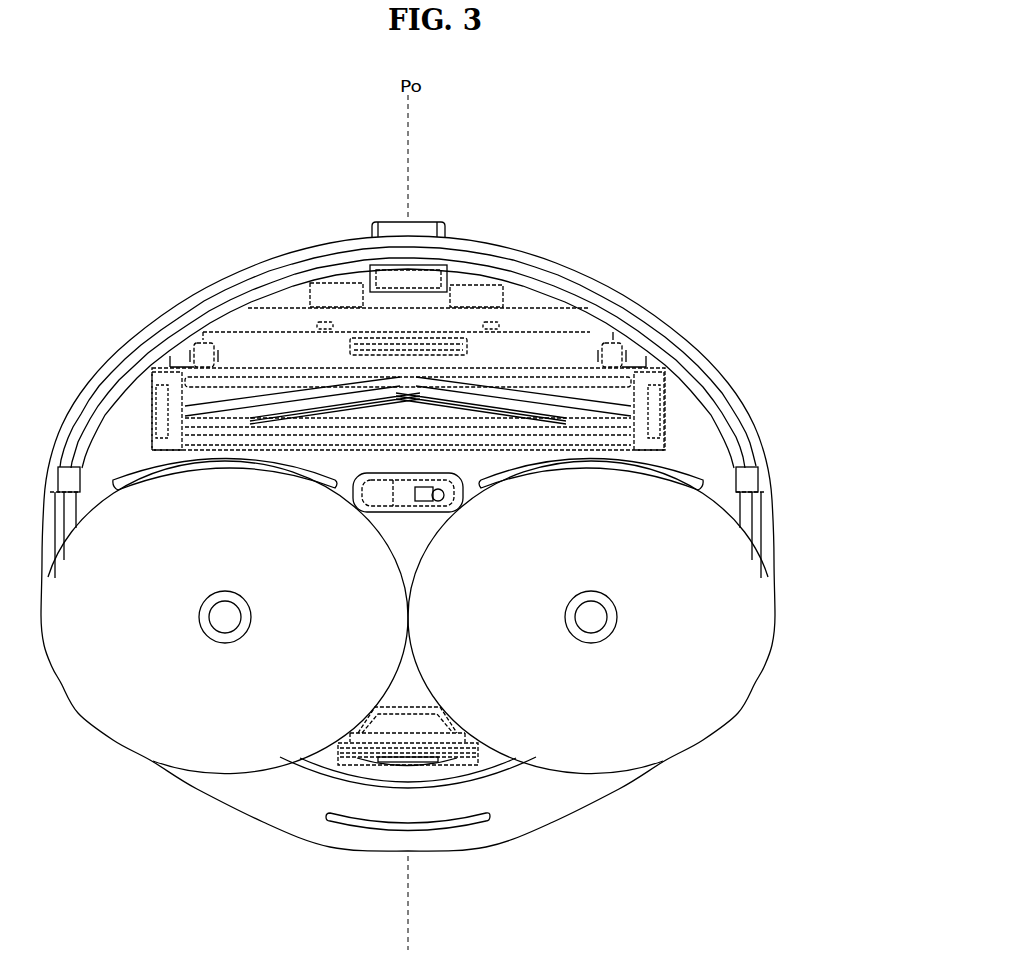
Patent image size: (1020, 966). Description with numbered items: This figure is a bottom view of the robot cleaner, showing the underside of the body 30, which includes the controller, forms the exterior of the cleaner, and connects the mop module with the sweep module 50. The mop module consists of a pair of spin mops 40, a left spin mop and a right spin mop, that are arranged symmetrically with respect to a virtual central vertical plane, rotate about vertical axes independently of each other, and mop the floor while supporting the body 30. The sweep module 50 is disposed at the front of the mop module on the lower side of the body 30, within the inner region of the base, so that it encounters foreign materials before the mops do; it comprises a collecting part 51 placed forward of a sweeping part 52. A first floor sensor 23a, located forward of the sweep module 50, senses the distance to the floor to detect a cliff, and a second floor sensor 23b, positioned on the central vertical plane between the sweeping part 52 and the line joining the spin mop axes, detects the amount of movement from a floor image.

The first floor sensor 23a is at (432, 278).
The second floor sensor 23b is at (440, 487).
The body 30 is at (557, 795).
The spin mop 40 is at (212, 730).
The sweep module 50 is at (642, 413).
The collecting part 51 is at (310, 348).
The sweeping part 52 is at (243, 410).